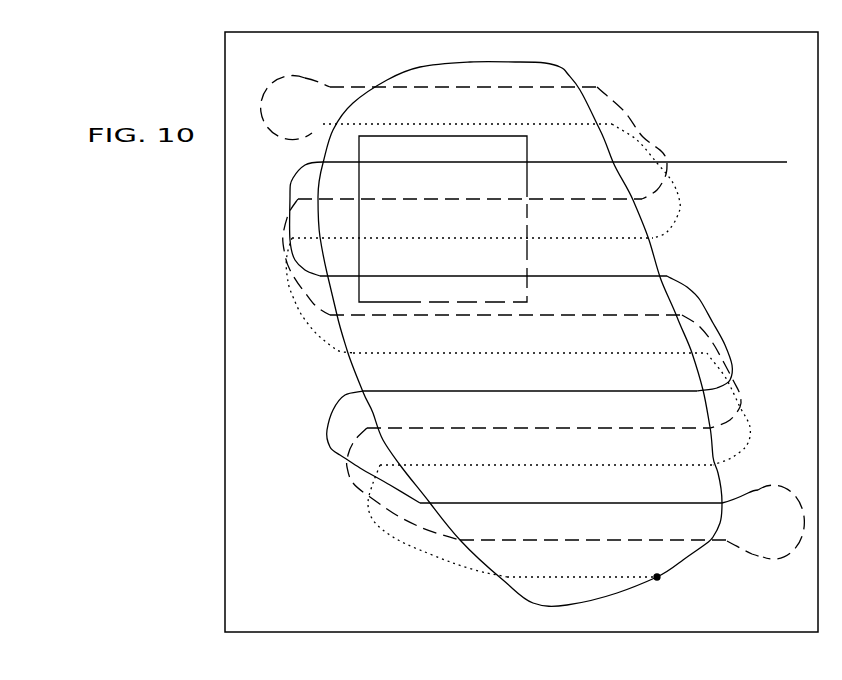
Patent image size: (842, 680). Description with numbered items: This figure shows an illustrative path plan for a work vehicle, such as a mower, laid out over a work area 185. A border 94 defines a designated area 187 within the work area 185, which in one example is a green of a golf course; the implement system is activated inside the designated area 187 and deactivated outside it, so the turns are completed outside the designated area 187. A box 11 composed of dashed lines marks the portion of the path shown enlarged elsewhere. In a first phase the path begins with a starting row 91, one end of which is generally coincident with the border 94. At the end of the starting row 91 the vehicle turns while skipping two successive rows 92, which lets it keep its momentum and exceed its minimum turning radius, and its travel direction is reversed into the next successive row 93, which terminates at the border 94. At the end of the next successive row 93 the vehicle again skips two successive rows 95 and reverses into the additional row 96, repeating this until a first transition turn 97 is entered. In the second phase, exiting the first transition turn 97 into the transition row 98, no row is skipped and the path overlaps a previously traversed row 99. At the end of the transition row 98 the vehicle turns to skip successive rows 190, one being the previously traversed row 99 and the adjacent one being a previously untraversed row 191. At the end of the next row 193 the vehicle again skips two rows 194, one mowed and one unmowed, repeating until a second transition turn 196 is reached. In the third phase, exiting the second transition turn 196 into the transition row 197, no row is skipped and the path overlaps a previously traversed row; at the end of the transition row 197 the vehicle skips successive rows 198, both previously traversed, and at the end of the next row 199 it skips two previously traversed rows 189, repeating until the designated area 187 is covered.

The box 11 is at (528, 148).
The starting row 91 is at (727, 160).
The skipped successive rows 92 is at (597, 200).
The next successive row 93 is at (562, 276).
The border 94 is at (547, 65).
The skipped successive rows 95 is at (618, 315).
The additional row 96 is at (558, 390).
The first transition turn 97 is at (787, 472).
The transition row 98 is at (610, 540).
The previously traversed row 99 is at (642, 503).
The work area 185 is at (818, 320).
The designated area 187 is at (565, 102).
The previously traversed rows 189 is at (457, 276).
The skipped successive rows 190 is at (618, 465).
The previously untraversed row 191 is at (462, 465).
The next row 193 is at (557, 428).
The skipped rows 194 is at (507, 353).
The second transition turn 196 is at (292, 73).
The transition row 197 is at (413, 125).
The skipped successive rows 198 is at (466, 163).
The next row 199 is at (430, 238).